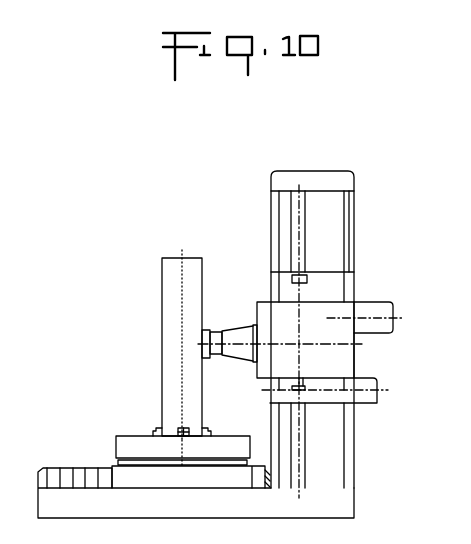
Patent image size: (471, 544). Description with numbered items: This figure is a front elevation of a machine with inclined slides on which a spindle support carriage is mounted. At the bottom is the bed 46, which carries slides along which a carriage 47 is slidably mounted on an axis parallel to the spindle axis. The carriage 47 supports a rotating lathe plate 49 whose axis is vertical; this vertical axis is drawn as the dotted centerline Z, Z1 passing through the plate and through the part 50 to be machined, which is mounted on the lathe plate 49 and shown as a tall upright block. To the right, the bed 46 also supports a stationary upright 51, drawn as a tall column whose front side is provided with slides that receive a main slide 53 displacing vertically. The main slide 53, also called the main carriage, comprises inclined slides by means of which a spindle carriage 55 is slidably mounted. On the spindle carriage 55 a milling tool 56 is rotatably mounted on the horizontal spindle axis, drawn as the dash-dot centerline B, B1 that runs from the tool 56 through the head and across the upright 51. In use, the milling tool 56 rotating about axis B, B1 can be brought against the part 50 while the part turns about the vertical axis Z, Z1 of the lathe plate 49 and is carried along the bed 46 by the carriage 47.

The bed 46 is at (196, 493).
The carriage 47 is at (200, 480).
The rotating lathe plate 49 is at (138, 436).
The part to be machined 50 is at (168, 313).
The stationary upright 51 is at (323, 452).
The main slide 53 is at (330, 290).
The spindle carriage 55 is at (337, 367).
The milling tool 56 is at (206, 330).
The spindle axis end point B is at (229, 341).
The spindle axis end point B1 is at (288, 347).
The lathe plate axis end point Z is at (181, 338).
The lathe plate axis end point Z1 is at (191, 453).